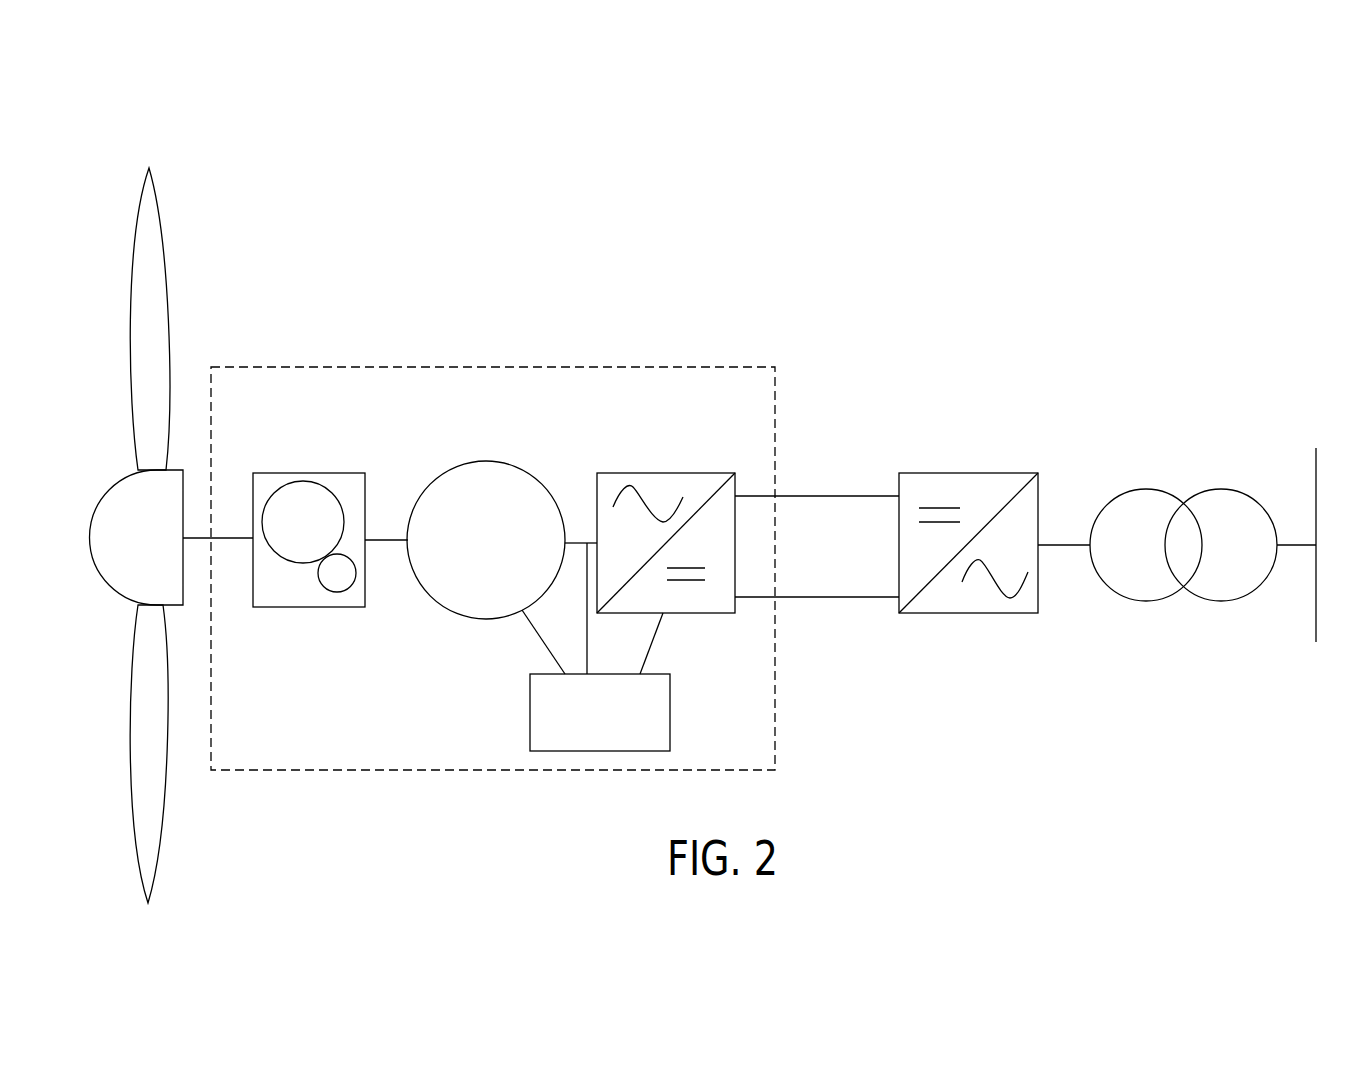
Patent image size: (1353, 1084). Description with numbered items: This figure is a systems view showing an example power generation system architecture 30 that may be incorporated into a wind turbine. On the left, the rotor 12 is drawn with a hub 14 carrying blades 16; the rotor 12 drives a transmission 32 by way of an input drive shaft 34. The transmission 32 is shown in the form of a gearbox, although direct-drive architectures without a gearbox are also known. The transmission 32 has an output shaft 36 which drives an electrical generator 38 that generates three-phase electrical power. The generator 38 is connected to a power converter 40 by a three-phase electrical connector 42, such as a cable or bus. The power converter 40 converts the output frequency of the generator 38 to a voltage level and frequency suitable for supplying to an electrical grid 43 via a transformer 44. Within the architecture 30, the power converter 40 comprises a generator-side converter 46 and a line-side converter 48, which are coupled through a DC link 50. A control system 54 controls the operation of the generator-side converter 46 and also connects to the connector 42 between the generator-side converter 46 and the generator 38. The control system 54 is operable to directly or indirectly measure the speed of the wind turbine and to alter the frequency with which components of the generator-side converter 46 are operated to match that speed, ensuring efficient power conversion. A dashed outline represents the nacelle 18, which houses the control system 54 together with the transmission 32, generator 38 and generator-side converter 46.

The rotor 12 is at (210, 298).
The hub 14 is at (112, 495).
The rotor blades 16 is at (147, 170).
The nacelle 18 is at (461, 366).
The power generation system architecture 30 is at (812, 177).
The transmission 32 is at (307, 472).
The input drive shaft 34 is at (219, 541).
The output shaft 36 is at (380, 542).
The electrical generator 38 is at (486, 460).
The power converter 40 is at (830, 398).
The three-phase electrical connector 42 is at (580, 542).
The electrical grid 43 is at (1316, 448).
The transformer 44 is at (1215, 601).
The generator-side converter 46 is at (660, 472).
The line-side converter 48 is at (977, 472).
The DC link 50 is at (862, 466).
The control system 54 is at (670, 712).